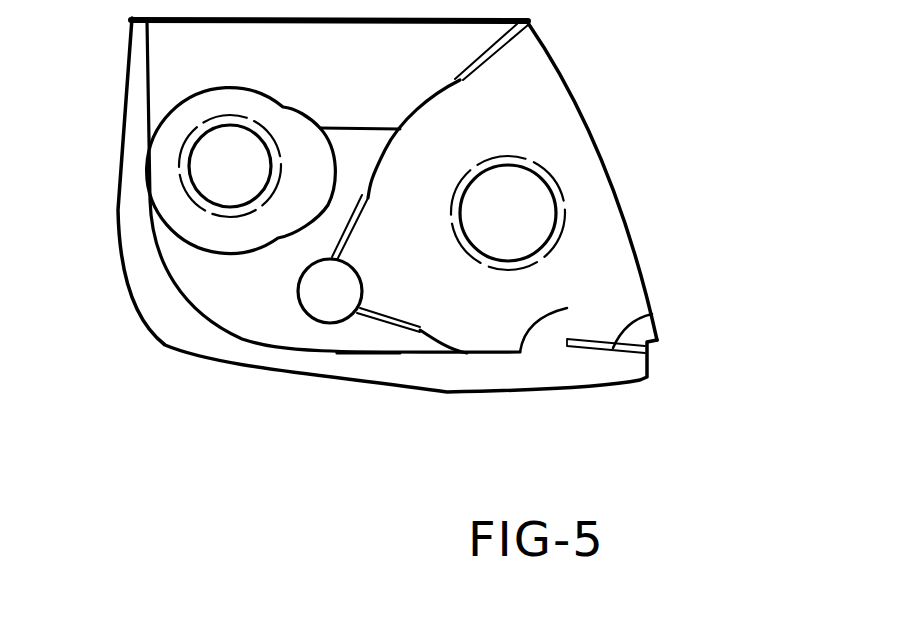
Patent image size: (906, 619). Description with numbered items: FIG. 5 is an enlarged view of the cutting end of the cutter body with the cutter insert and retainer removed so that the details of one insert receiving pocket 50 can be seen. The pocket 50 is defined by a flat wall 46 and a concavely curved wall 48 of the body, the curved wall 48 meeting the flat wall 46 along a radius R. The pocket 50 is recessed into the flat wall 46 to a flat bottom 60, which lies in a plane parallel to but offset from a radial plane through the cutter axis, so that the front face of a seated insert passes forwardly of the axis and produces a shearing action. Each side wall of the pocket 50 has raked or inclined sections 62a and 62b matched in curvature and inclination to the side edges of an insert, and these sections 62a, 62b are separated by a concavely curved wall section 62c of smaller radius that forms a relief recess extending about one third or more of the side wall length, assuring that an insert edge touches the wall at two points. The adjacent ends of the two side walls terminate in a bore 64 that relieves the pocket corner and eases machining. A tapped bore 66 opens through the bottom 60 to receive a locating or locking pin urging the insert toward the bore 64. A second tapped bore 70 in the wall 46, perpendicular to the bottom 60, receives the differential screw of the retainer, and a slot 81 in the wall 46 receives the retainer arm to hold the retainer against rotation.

The flat wall 46 is at (413, 67).
The concavely curved wall 48 is at (266, 345).
The radius R is at (390, 349).
The insert receiving pocket 50 is at (582, 118).
The flat bottom 60 is at (446, 278).
The inclined side wall section 62a is at (533, 37).
The inclined side wall section 62b is at (367, 233).
The concavely curved wall section 62c is at (420, 105).
The bore 64 is at (307, 276).
The tapped bore 66 is at (548, 203).
The second tapped bore 70 is at (190, 172).
The slot 81 is at (335, 133).